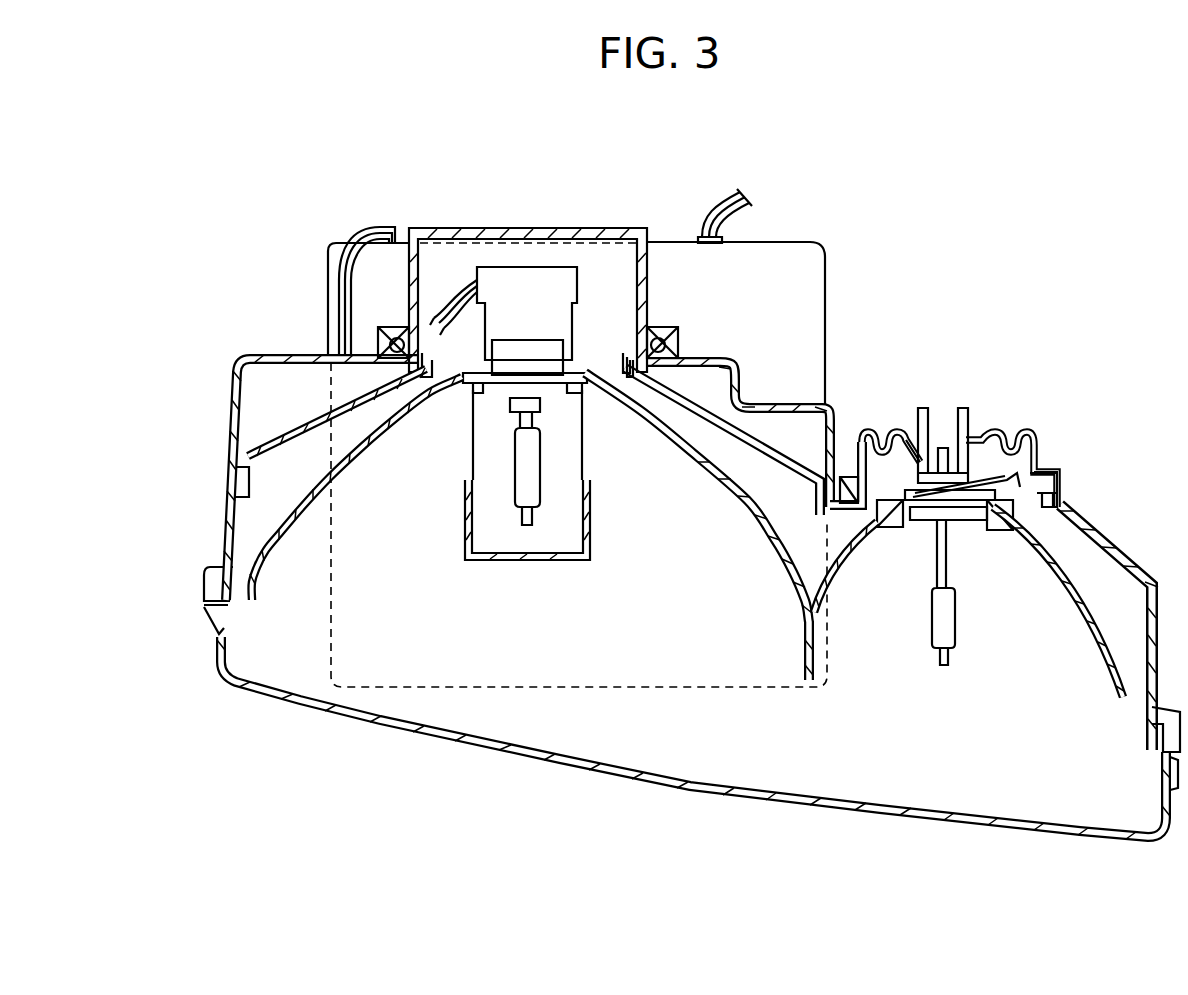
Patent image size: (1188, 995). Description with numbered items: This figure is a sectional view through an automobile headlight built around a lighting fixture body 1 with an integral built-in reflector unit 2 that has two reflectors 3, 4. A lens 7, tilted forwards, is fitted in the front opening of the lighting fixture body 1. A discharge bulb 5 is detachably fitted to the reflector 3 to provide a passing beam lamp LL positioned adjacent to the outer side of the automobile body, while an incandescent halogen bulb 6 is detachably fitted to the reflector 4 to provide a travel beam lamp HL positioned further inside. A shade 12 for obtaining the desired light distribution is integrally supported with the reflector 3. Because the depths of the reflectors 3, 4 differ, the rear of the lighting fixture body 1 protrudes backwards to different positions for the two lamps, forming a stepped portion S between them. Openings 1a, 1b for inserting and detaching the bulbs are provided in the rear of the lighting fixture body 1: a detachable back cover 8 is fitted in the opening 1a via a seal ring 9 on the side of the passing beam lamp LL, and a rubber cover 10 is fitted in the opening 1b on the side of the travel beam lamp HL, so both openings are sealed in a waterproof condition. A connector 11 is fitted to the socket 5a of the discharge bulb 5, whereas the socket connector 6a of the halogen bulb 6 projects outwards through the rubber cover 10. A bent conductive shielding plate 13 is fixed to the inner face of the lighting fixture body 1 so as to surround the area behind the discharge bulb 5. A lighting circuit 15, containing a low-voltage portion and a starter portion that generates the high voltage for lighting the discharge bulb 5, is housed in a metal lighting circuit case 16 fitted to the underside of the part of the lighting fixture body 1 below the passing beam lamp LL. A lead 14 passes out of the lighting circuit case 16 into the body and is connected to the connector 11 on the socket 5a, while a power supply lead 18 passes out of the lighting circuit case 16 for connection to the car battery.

The lighting fixture body 1 is at (1117, 547).
The opening 1a is at (672, 366).
The opening 1b is at (1053, 507).
The reflector unit 2 is at (757, 491).
The reflector 3 is at (357, 457).
The reflector 4 is at (850, 570).
The discharge bulb 5 is at (527, 463).
The socket 5a is at (543, 330).
The incandescent bulb 6 is at (950, 607).
The socket connector 6a is at (967, 427).
The lens 7 is at (590, 767).
The back cover 8 is at (513, 228).
The seal ring 9 is at (662, 330).
The rubber cover 10 is at (1033, 440).
The connector 11 is at (580, 287).
The shade 12 is at (550, 557).
The shielding plate 13 is at (287, 433).
The lead 14 is at (457, 290).
The lighting circuit 15 is at (828, 244).
The lighting circuit case 16 is at (820, 287).
The power supply lead 18 is at (740, 197).
The stepped portion S is at (833, 450).
The passing beam lamp LL is at (586, 566).
The travel beam lamp HL is at (982, 638).